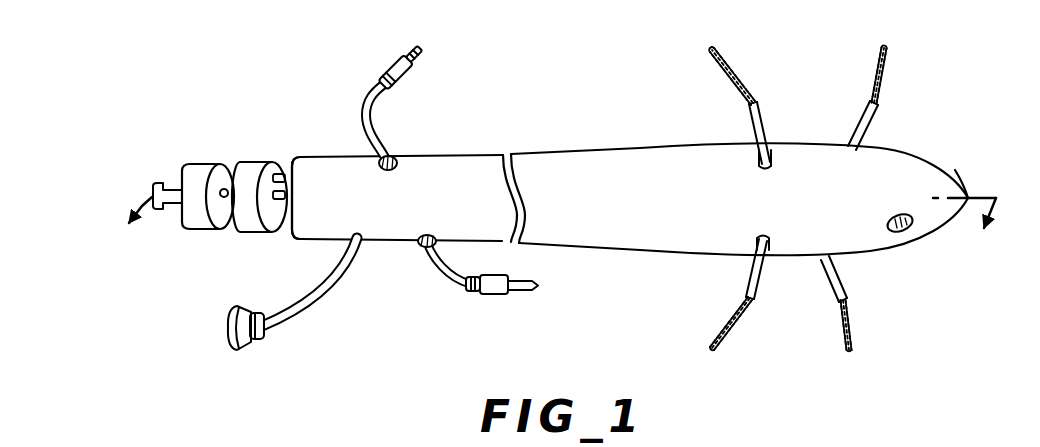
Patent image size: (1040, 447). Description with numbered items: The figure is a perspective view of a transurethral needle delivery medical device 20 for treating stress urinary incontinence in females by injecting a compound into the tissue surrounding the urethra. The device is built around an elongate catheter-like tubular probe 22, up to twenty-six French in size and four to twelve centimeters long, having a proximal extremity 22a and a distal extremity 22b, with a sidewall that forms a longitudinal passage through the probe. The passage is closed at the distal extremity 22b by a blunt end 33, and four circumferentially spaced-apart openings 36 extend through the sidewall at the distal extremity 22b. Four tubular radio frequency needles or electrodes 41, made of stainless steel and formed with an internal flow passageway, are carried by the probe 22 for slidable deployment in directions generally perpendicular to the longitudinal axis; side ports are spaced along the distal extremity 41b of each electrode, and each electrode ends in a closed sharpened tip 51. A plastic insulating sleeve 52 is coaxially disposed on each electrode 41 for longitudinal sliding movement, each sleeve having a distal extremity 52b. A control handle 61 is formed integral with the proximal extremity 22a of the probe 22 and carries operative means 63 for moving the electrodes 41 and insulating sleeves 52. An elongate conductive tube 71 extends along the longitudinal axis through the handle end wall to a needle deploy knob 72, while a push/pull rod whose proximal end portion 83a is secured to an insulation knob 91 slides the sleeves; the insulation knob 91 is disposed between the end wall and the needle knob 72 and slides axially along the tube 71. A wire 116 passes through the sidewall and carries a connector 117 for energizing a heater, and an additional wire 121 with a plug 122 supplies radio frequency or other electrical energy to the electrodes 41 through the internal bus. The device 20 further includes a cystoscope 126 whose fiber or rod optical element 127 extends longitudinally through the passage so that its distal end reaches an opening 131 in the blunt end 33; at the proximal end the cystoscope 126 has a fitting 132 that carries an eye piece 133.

The transurethral needle delivery medical device 20 is at (567, 80).
The elongate tubular probe member 22 is at (598, 147).
The proximal extremity of probe 22a is at (466, 153).
The distal extremity of probe 22b is at (897, 148).
The blunt end 33 is at (951, 171).
The openings 36 is at (765, 240).
The tubular radio frequency needles or electrodes 41 is at (743, 72).
The distal extremity of electrode 41b is at (742, 90).
The closed sharpened tip 51 is at (707, 52).
The insulating sleeve 52 is at (857, 117).
The distal extremity of insulating sleeve 52b is at (755, 240).
The control handle 61 is at (336, 178).
The operative means 63 is at (212, 167).
The elongate tube 71 is at (221, 190).
The needle deploy knob 72 is at (197, 217).
The proximal end portion of push/pull rod 83a is at (278, 173).
The insulation knob 91 is at (248, 220).
The wire 116 is at (379, 134).
The connector 117 is at (395, 84).
The wire 121 is at (443, 278).
The plug 122 is at (500, 295).
The cystoscope 126 is at (355, 280).
The optical element 127 is at (898, 232).
The opening 131 is at (893, 218).
The fitting 132 is at (264, 331).
The eye piece 133 is at (228, 330).